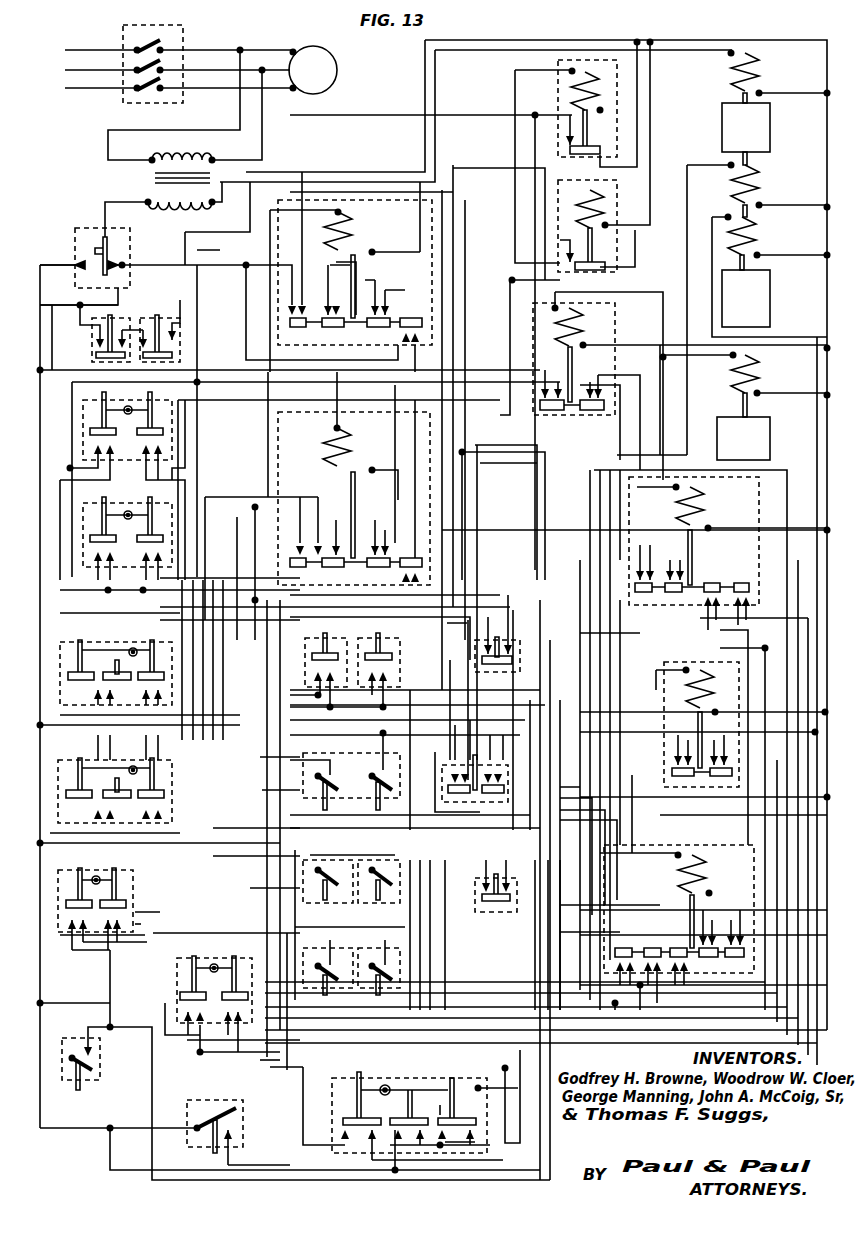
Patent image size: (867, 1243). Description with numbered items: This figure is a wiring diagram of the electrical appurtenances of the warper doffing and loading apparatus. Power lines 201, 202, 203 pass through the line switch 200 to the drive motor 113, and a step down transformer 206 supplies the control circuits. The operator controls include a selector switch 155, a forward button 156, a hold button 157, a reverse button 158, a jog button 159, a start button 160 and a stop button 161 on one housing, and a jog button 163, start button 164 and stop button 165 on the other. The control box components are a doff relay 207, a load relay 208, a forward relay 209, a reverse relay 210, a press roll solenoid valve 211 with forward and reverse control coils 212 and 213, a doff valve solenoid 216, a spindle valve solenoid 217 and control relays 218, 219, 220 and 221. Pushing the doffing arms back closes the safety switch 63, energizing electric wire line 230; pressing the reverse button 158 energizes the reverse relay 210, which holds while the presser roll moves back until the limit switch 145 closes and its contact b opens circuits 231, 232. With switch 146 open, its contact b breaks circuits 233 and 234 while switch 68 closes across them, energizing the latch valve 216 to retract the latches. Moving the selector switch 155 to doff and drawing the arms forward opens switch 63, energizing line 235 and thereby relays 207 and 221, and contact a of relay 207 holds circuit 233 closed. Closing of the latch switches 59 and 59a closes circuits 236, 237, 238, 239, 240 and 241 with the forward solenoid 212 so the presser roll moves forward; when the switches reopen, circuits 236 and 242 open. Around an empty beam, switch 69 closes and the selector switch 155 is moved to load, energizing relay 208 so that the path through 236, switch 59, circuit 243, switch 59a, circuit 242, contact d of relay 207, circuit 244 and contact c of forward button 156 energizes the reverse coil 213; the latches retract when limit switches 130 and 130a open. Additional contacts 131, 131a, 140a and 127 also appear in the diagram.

The line switch 200 is at (150, 28).
The power line 201 is at (90, 50).
The power line 202 is at (84, 70).
The power line 203 is at (92, 92).
The drive motor 113 is at (332, 76).
The step down transformer 206 is at (180, 171).
The safety switch 63 is at (84, 230).
The line 235 is at (55, 265).
The electric wire line 230 is at (98, 306).
The stop button 165 is at (170, 314).
The stop button 161 is at (94, 344).
The jog button 159 is at (136, 402).
The jog button 163 is at (136, 506).
The forward button 156 is at (182, 698).
The reverse button 158 is at (100, 760).
The circuit 240 is at (146, 884).
The circuit 233 is at (142, 924).
The switch 146 is at (58, 923).
The circuit 234 is at (107, 970).
The limit switch 145 is at (180, 978).
The switch 68 is at (96, 1054).
The switch 69 is at (210, 1098).
The circuit 231 is at (272, 1066).
The circuit 232 is at (280, 1090).
The selector switch 155 is at (412, 1078).
The limit switch 130 is at (333, 976).
The limit switch 130a is at (386, 976).
The limit switch 131 is at (333, 889).
The limit switch 131a is at (384, 889).
The circuit 238 is at (352, 847).
The circuit 243 is at (351, 764).
The latch switch 59 is at (278, 757).
The latch switch 59a is at (394, 751).
The circuit 236 is at (278, 790).
The circuit 244 is at (266, 828).
The circuit 241 is at (226, 862).
The circuit 237 is at (266, 888).
The circuit 239 is at (228, 934).
The relay contact 140a is at (496, 889).
The relay contacts 127 is at (495, 800).
The circuit 242 is at (492, 736).
The hold button 157 is at (482, 676).
The start button 160 is at (345, 635).
The start button 164 is at (390, 666).
The forward relay 209 is at (355, 282).
The reverse relay 210 is at (317, 478).
The control relay 220 is at (560, 420).
The control relay 218 is at (558, 85).
The control relay 219 is at (620, 233).
The forward control coil 212 is at (764, 60).
The press roll solenoid valve 211 is at (746, 127).
The reverse control coil 213 is at (764, 169).
The doff valve solenoid 216 is at (746, 271).
The spindle valve solenoid 217 is at (743, 406).
The doff relay 207 is at (678, 600).
The control relay 221 is at (668, 664).
The load relay 208 is at (724, 854).